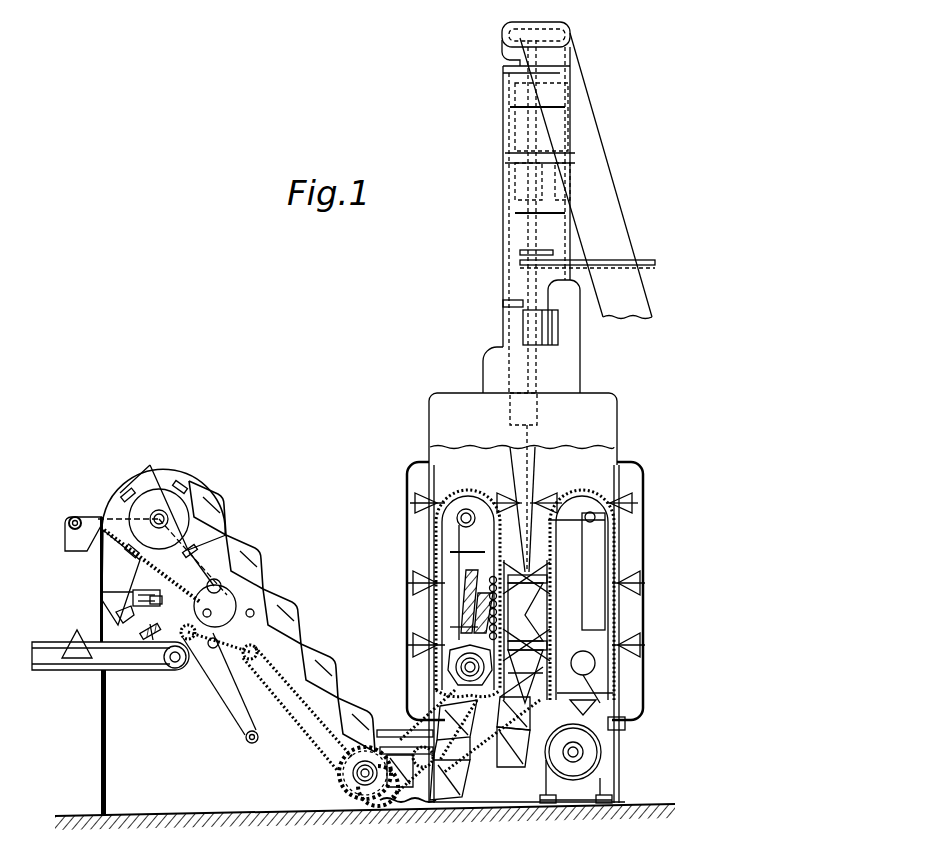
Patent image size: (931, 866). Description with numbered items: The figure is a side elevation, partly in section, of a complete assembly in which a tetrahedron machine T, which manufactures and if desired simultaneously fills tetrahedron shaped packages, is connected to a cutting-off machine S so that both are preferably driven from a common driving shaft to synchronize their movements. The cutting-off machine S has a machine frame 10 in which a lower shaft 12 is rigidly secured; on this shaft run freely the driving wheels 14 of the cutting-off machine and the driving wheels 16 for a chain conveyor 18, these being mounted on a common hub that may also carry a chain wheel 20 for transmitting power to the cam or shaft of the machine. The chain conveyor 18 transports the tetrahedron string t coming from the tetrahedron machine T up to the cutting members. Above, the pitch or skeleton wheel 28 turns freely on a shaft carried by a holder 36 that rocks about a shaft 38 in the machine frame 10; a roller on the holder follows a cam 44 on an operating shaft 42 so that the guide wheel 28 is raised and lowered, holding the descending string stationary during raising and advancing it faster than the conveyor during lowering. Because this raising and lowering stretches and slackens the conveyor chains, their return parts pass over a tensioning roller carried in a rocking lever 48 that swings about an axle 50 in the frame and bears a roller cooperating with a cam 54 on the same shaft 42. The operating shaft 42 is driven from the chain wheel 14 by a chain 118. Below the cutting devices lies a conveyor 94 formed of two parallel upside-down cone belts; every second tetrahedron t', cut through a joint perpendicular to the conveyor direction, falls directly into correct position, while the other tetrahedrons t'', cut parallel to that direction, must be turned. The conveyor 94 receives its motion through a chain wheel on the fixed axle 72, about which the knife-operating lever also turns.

The machine frame 10 is at (119, 480).
The pitch or skeleton wheel 28 is at (180, 505).
The shaft 38 is at (68, 521).
The holder 36 is at (97, 535).
The tetrahedron string t is at (247, 608).
The cam 54 is at (222, 596).
The cam 44 is at (254, 611).
The operating shaft 42 is at (207, 611).
The tetrahedron t'' is at (103, 609).
The tetrahedron t' is at (65, 638).
The conveyor 94 is at (158, 676).
The fixed axle 72 is at (181, 668).
The rocking lever 48 is at (229, 699).
The axle 50 is at (247, 742).
The chain conveyor 18 is at (299, 718).
The chain 118 is at (304, 742).
The lower shaft 12 is at (355, 774).
The driving wheels 16 is at (353, 795).
The driving wheels 14 is at (385, 797).
The chain wheel 20 is at (367, 745).
The cutting-off machine S is at (104, 757).
The tetrahedron machine T is at (427, 412).